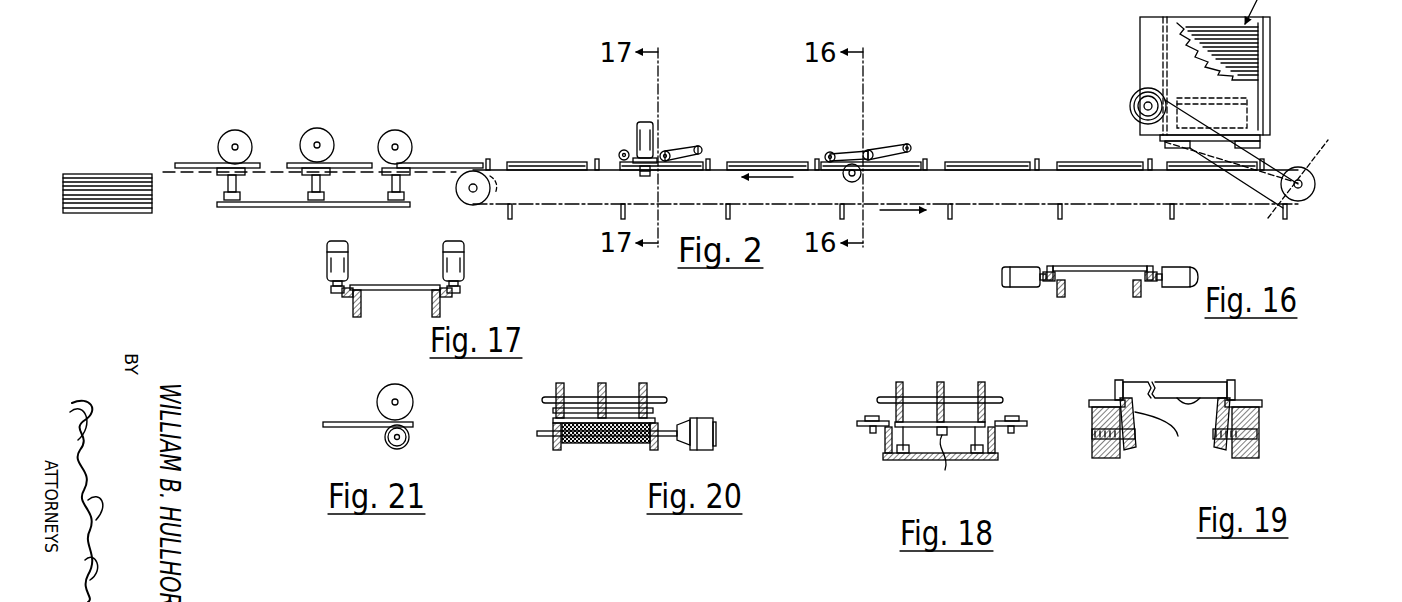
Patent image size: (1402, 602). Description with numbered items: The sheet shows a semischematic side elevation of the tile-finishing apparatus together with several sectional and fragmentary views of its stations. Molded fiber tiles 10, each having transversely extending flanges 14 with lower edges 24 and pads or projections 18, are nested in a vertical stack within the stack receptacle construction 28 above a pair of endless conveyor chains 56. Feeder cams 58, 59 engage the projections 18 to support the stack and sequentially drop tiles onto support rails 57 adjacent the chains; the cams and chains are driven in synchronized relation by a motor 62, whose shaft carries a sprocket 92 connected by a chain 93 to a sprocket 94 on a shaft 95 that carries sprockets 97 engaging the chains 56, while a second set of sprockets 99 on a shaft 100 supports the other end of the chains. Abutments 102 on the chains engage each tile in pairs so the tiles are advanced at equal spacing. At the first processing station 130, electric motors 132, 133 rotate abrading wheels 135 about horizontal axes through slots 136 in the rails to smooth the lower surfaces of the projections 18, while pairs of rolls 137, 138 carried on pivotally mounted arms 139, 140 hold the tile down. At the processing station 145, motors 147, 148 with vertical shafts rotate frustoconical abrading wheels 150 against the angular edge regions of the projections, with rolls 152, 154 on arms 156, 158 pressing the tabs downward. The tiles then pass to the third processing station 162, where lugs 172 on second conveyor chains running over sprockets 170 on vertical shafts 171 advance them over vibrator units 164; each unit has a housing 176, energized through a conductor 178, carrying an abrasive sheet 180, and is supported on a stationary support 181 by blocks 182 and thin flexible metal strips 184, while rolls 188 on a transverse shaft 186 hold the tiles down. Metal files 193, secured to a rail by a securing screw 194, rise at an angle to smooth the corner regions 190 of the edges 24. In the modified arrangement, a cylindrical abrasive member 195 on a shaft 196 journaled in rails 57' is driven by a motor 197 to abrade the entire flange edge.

In FIG. 2, the tile 10 is at (108, 174).
In FIG. 17, the tile 10 is at (402, 283).
In FIG. 16, the tile 10 is at (1094, 265).
In FIG. 21, the tile 10 is at (334, 420).
In FIG. 20, the tile 10 is at (586, 407).
In FIG. 18, the tile 10 is at (937, 412).
In FIG. 19, the tile 10 is at (1178, 381).
In FIG. 20, the flanges 14 is at (626, 420).
In FIG. 19, the flanges 14 is at (1186, 388).
In FIG. 17, the projections 18 is at (352, 288).
In FIG. 16, the projections 18 is at (1049, 266).
In FIG. 19, the projections 18 is at (1116, 390).
In FIG. 19, the lower edges 24 is at (1196, 398).
In FIG. 2, the stack receptacle construction 28 is at (1278, 29).
In FIG. 2, the conveyor chains 56 is at (938, 204).
In FIG. 17, the support rails 57 is at (404, 303).
In FIG. 16, the support rails 57 is at (1082, 302).
In FIG. 18, the support rails 57 is at (936, 431).
In FIG. 19, the support rails 57 is at (1189, 439).
In FIG. 20, the rails 57' is at (580, 444).
In FIG. 2, the cam 58 is at (1240, 149).
In FIG. 2, the cam 59 is at (1185, 148).
In FIG. 2, the motor 62 is at (1136, 95).
In FIG. 2, the sprocket 92 is at (1140, 105).
In FIG. 2, the chain 93 is at (1302, 173).
In FIG. 2, the sprocket 94 is at (1316, 185).
In FIG. 2, the shaft 95 is at (1302, 182).
In FIG. 2, the sprockets 97 is at (1278, 205).
In FIG. 2, the sprockets 99 is at (496, 188).
In FIG. 2, the shaft 100 is at (457, 188).
In FIG. 2, the abutments 102 is at (488, 159).
In FIG. 2, the first processing station 130 is at (845, 130).
In FIG. 16, the first processing station 130 is at (1160, 262).
In FIG. 2, the electric motor 132 is at (850, 183).
In FIG. 16, the electric motor 132 is at (1002, 272).
In FIG. 16, the electric motor 133 is at (1200, 276).
In FIG. 2, the abrading wheels 135 is at (843, 176).
In FIG. 16, the abrading wheels 135 is at (1048, 282).
In FIG. 16, the slots 136 is at (1080, 272).
In FIG. 2, the rolls 137 is at (888, 150).
In FIG. 2, the rolls 138 is at (825, 156).
In FIG. 2, the arm 139 is at (908, 145).
In FIG. 2, the arm 140 is at (828, 151).
In FIG. 2, the processing station 145 is at (645, 118).
In FIG. 17, the processing station 145 is at (417, 248).
In FIG. 2, the motor 147 is at (637, 130).
In FIG. 17, the motor 147 is at (327, 256).
In FIG. 17, the motor 148 is at (464, 260).
In FIG. 2, the abrading wheel 150 is at (645, 177).
In FIG. 17, the abrading wheel 150 is at (331, 290).
In FIG. 2, the rolls 152 is at (620, 153).
In FIG. 2, the rolls 154 is at (690, 147).
In FIG. 2, the arms 156 is at (637, 147).
In FIG. 2, the arms 158 is at (670, 154).
In FIG. 2, the third processing station 162 is at (346, 112).
In FIG. 18, the third processing station 162 is at (961, 362).
In FIG. 18, the vibrator units 164 is at (935, 472).
In FIG. 18, the sprockets 170 is at (864, 421).
In FIG. 18, the vertical shaft 171 is at (871, 416).
In FIG. 18, the lugs 172 is at (870, 428).
In FIG. 18, the housing 176 is at (938, 445).
In FIG. 18, the conductor 178 is at (947, 468).
In FIG. 18, the abrasive sheet 180 is at (918, 422).
In FIG. 2, the stationary support 181 is at (218, 205).
In FIG. 18, the stationary support 181 is at (890, 460).
In FIG. 18, the blocks 182 is at (900, 450).
In FIG. 2, the flexible metal strips 184 is at (228, 184).
In FIG. 18, the flexible metal strips 184 is at (903, 440).
In FIG. 2, the transverse shaft 186 is at (232, 146).
In FIG. 21, the transverse shaft 186 is at (392, 402).
In FIG. 20, the transverse shaft 186 is at (545, 400).
In FIG. 18, the transverse shaft 186 is at (1000, 397).
In FIG. 2, the rolls 188 is at (228, 131).
In FIG. 21, the rolls 188 is at (404, 387).
In FIG. 20, the rolls 188 is at (556, 392).
In FIG. 18, the rolls 188 is at (898, 382).
In FIG. 19, the corner regions 190 is at (1122, 380).
In FIG. 19, the metal files 193 is at (1216, 414).
In FIG. 19, the securing screw 194 is at (1215, 436).
In FIG. 21, the cylindrical abrasive member 195 is at (389, 447).
In FIG. 20, the cylindrical abrasive member 195 is at (606, 444).
In FIG. 21, the shaft 196 is at (385, 438).
In FIG. 20, the shaft 196 is at (673, 432).
In FIG. 21, the motor 197 is at (410, 440).
In FIG. 20, the motor 197 is at (711, 420).